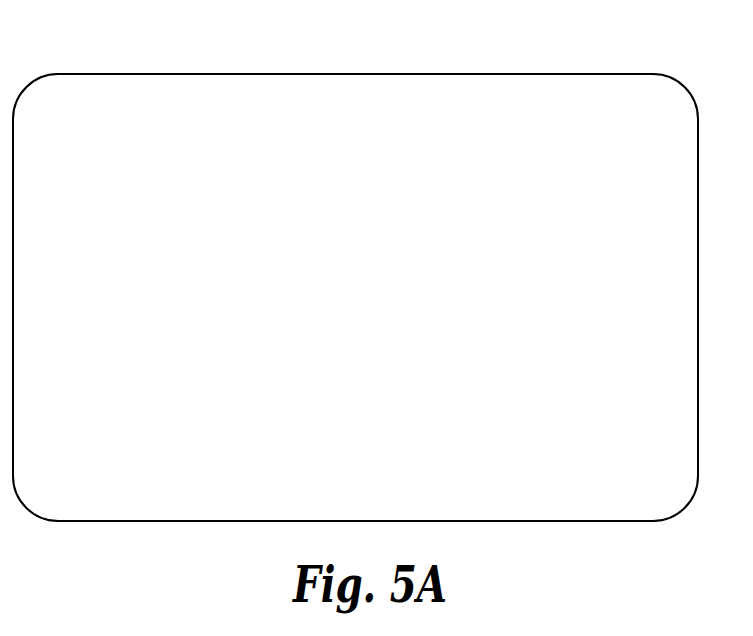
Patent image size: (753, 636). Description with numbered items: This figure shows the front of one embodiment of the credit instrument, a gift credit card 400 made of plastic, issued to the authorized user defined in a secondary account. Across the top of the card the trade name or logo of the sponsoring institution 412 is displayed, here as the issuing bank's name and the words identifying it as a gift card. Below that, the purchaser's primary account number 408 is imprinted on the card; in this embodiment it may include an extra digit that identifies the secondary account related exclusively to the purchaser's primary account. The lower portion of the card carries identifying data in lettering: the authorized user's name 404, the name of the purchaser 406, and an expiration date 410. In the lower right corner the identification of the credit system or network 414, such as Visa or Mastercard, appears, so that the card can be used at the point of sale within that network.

The credit card 400 is at (510, 88).
The identification of the sponsoring institution 412 is at (90, 130).
The account number 408 is at (508, 286).
The authorized user's name 404 is at (415, 372).
The name of the purchaser 406 is at (378, 410).
The expiration date 410 is at (203, 443).
The identification of the credit system or network 414 is at (610, 493).